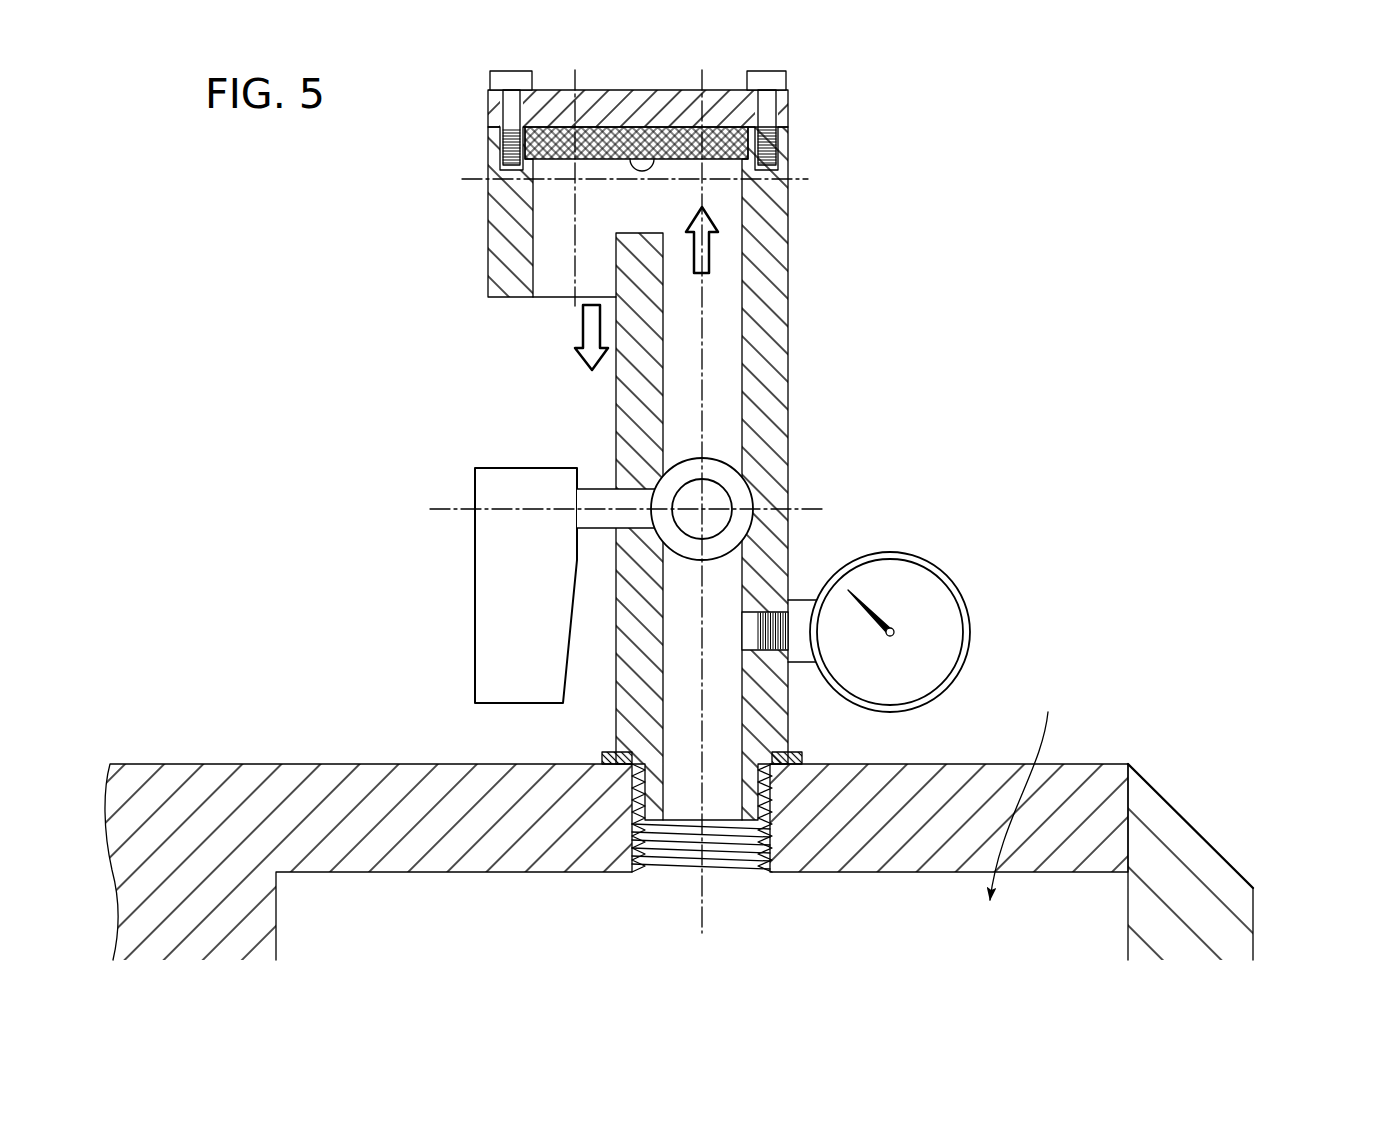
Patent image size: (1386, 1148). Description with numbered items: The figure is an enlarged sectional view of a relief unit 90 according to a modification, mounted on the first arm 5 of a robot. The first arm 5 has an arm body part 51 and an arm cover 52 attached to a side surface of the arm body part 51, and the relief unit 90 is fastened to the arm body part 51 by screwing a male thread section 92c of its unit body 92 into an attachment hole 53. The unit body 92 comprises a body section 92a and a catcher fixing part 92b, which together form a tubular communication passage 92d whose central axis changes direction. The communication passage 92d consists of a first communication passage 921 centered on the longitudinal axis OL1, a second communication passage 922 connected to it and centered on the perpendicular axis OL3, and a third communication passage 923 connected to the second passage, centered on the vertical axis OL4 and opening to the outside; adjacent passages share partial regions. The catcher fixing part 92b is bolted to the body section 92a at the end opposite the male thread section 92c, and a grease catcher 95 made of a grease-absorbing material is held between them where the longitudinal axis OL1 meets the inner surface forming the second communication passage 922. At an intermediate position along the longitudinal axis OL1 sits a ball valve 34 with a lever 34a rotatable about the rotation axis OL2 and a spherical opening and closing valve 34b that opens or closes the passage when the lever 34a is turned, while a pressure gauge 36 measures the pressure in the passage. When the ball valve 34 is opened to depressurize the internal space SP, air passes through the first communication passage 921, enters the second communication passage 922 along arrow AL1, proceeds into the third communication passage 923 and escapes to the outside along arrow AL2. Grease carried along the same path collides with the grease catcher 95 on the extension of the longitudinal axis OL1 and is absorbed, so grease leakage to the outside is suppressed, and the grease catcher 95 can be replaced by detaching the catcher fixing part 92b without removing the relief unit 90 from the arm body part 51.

The relief unit 90 is at (924, 106).
The unit body 92 is at (966, 130).
The body section 92a is at (788, 418).
The catcher fixing part 92b is at (788, 110).
The male thread section 92c is at (774, 790).
The communication passage 92d is at (897, 217).
The first communication passage 921 is at (722, 400).
The second communication passage 922 is at (678, 193).
The third communication passage 923 is at (613, 273).
The grease catcher 95 is at (641, 152).
The ball valve 34 is at (603, 400).
The lever 34a is at (491, 468).
The opening and closing valve 34b is at (668, 470).
The pressure gauge 36 is at (970, 629).
The first arm 5 is at (1327, 672).
The arm body part 51 is at (1085, 766).
The arm cover 52 is at (1253, 918).
The attachment hole 53 is at (645, 860).
The longitudinal axis OL1 is at (701, 485).
The rotation axis OL2 is at (598, 510).
The perpendicular axis OL3 is at (611, 180).
The vertical axis OL4 is at (570, 172).
The arrow AL1 is at (688, 208).
The arrow AL2 is at (583, 322).
The internal space SP is at (1025, 790).